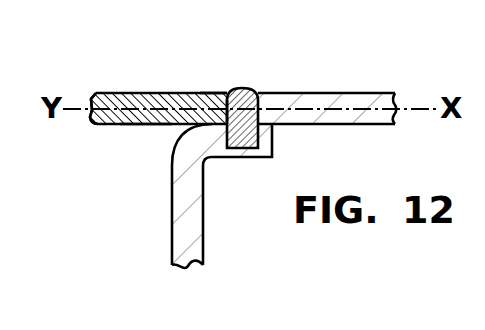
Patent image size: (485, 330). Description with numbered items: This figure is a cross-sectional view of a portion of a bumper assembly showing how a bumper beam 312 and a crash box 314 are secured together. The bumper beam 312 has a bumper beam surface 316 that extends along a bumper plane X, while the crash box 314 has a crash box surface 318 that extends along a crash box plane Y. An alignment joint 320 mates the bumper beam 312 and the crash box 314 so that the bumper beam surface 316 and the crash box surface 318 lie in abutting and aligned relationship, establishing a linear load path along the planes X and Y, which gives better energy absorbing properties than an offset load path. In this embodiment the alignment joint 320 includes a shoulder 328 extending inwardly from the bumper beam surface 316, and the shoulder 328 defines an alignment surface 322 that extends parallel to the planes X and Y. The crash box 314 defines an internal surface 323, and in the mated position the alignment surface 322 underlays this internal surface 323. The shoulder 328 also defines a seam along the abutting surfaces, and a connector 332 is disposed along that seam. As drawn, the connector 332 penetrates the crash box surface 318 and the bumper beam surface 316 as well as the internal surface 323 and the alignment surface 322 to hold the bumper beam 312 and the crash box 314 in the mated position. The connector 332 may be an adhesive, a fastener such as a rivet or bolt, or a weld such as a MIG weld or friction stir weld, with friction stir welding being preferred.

The bumper beam 312 is at (396, 97).
The crash box 314 is at (95, 93).
The bumper beam surface 316 is at (357, 93).
The crash box surface 318 is at (127, 93).
The alignment joint 320 is at (206, 160).
The alignment surface 322 is at (233, 119).
The internal surface 323 is at (147, 125).
The shoulder 328 is at (223, 93).
The connector 332 is at (240, 89).